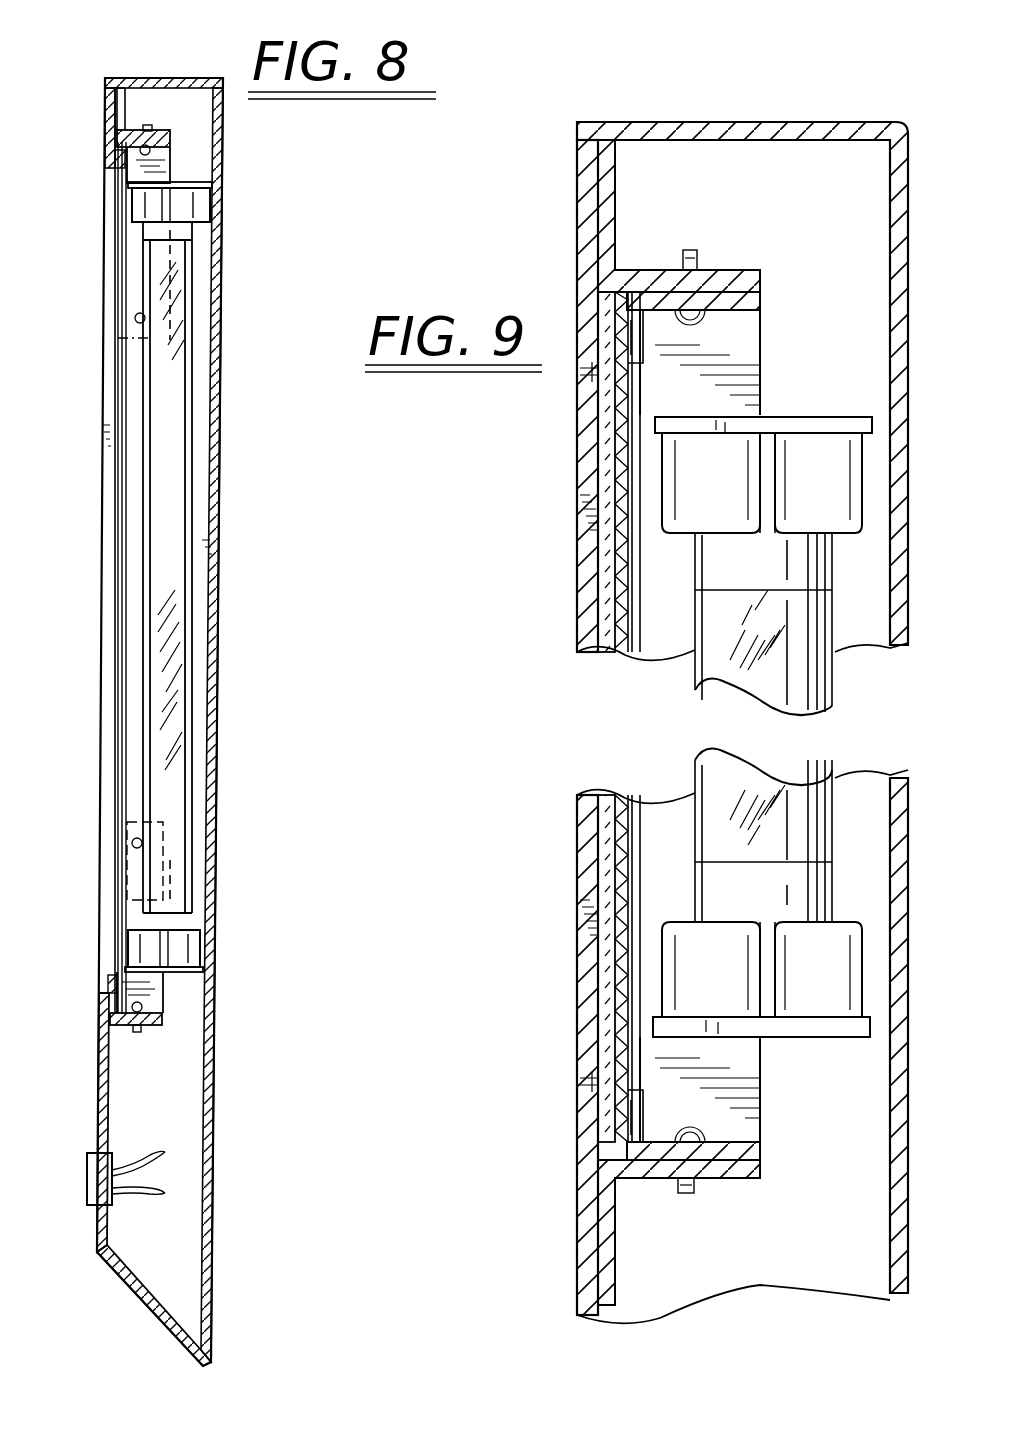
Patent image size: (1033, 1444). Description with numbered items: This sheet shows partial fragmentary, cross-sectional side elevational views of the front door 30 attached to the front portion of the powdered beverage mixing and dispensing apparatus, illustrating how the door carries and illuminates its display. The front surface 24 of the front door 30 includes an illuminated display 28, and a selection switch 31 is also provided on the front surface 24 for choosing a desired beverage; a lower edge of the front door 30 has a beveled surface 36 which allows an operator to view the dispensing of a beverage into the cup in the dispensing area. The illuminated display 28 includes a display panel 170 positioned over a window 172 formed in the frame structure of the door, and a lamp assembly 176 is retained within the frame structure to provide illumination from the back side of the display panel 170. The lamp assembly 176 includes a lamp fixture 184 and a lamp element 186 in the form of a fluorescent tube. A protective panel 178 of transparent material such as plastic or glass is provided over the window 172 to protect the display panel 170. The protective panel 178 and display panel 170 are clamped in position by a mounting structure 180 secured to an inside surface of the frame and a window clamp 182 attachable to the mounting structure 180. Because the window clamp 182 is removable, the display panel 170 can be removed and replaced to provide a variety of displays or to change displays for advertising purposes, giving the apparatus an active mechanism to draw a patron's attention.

In FIG. 8, the front surface 24 is at (100, 1095).
In FIG. 9, the front surface 24 is at (580, 258).
In FIG. 8, the illuminated display 28 is at (100, 575).
In FIG. 8, the front door 30 is at (150, 78).
In FIG. 9, the front door 30 is at (578, 164).
In FIG. 8, the selection switch 31 is at (96, 1188).
In FIG. 8, the beveled surface 36 is at (136, 1294).
In FIG. 9, the display panel 170 is at (650, 598).
In FIG. 8, the window 172 is at (112, 172).
In FIG. 9, the window 172 is at (593, 377).
In FIG. 8, the lamp assembly 176 is at (186, 590).
In FIG. 9, the protective panel 178 is at (600, 553).
In FIG. 8, the mounting structure 180 is at (143, 1032).
In FIG. 9, the mounting structure 180 is at (610, 196).
In FIG. 8, the window clamp 182 is at (162, 1010).
In FIG. 9, the window clamp 182 is at (753, 297).
In FIG. 8, the lamp fixture 184 is at (195, 205).
In FIG. 9, the lamp fixture 184 is at (800, 465).
In FIG. 8, the lamp element 186 is at (175, 703).
In FIG. 9, the lamp element 186 is at (797, 670).